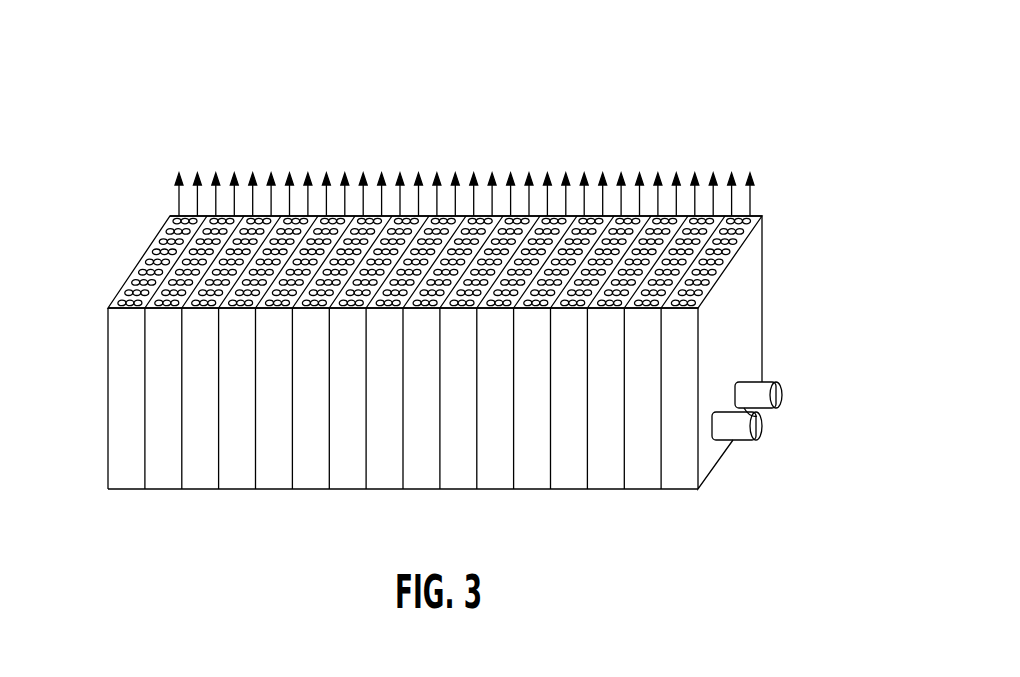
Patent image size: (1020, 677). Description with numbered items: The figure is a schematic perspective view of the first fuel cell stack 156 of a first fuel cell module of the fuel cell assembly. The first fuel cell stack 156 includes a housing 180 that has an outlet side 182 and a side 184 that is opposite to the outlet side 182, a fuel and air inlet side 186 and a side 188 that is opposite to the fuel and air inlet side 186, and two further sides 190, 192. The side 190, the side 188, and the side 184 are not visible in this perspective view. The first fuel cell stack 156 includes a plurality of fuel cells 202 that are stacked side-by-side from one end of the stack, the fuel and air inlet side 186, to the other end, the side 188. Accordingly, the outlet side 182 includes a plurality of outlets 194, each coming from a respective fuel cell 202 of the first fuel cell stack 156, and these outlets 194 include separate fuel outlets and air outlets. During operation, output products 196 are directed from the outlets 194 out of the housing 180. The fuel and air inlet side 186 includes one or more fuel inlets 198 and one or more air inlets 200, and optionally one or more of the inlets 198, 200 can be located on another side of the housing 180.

The first fuel cell stack 156 is at (164, 106).
The housing 180 is at (148, 257).
The outlet side 182 is at (701, 209).
The side 184 is at (569, 494).
The fuel and air inlet side 186 is at (752, 342).
The side 188 is at (104, 456).
The side 190 is at (768, 257).
The side 192 is at (443, 468).
The outlets 194 is at (438, 214).
The output products 196 is at (178, 203).
The fuel inlets 198 is at (722, 441).
The air inlets 200 is at (760, 426).
The fuel cells 202 is at (317, 455).